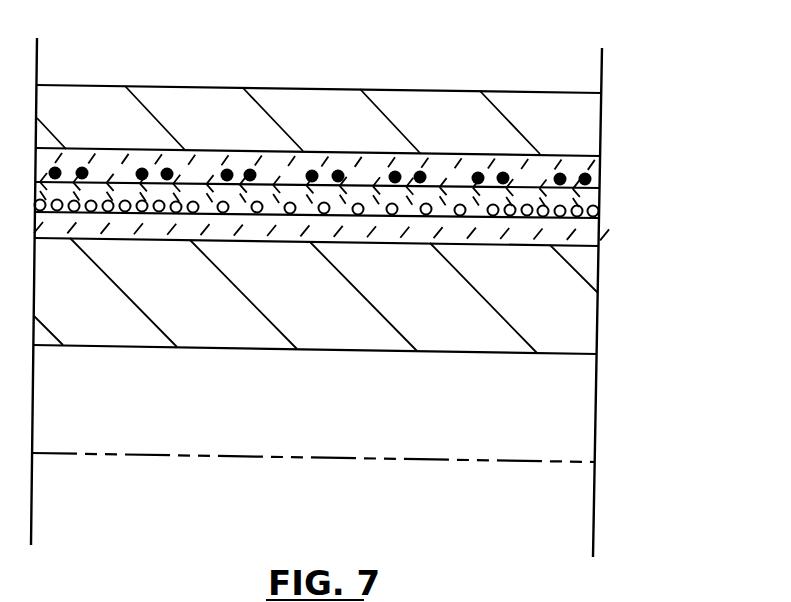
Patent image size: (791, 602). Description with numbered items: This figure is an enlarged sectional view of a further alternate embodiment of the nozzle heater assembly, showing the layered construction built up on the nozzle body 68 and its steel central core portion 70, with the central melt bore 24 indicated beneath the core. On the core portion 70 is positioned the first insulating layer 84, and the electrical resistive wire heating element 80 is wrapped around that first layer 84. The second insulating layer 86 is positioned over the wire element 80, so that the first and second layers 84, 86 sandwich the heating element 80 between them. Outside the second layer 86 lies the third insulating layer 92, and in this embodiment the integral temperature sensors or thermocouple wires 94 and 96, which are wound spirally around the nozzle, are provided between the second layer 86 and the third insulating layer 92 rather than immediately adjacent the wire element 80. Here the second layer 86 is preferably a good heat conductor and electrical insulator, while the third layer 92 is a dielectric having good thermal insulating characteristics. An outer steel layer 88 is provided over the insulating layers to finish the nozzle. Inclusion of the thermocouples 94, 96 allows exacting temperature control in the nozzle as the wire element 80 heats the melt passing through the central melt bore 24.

The outer steel layer 88 is at (565, 105).
The third insulating layer 92 is at (545, 157).
The thermocouple wire 96 is at (573, 155).
The thermocouple wire 94 is at (580, 170).
The second insulating layer 86 is at (565, 190).
The electrical resistive wire heating element 80 is at (570, 223).
The first insulating layer 84 is at (563, 245).
The body 68 is at (386, 296).
The steel central core portion 70 is at (572, 315).
The central melt bore 24 is at (572, 397).